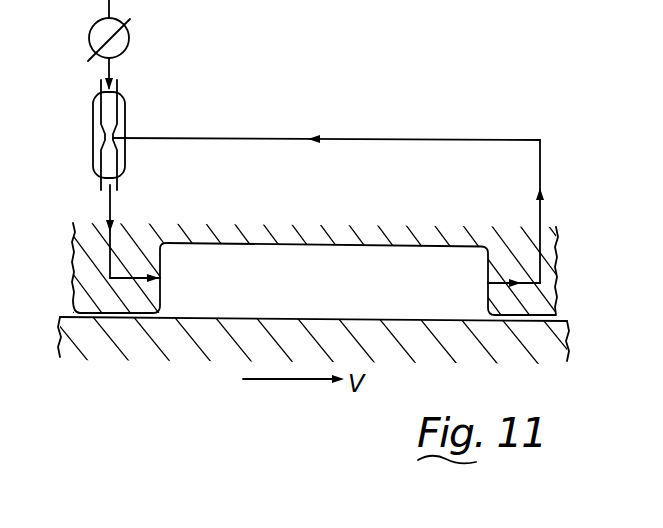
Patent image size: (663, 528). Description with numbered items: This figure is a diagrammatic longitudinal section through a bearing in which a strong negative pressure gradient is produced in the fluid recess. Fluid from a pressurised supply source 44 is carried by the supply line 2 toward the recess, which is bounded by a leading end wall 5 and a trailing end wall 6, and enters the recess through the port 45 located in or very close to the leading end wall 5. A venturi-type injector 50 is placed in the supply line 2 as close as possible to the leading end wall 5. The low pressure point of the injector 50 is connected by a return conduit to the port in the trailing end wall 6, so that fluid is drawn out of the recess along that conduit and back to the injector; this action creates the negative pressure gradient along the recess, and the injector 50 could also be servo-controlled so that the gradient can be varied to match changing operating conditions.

The supply source 44 is at (90, 41).
The venturi-type injector 50 is at (103, 138).
The conduit 2 is at (105, 207).
The leading end wall 5 is at (183, 252).
The trailing end wall 6 is at (486, 264).
The port 45 is at (176, 287).